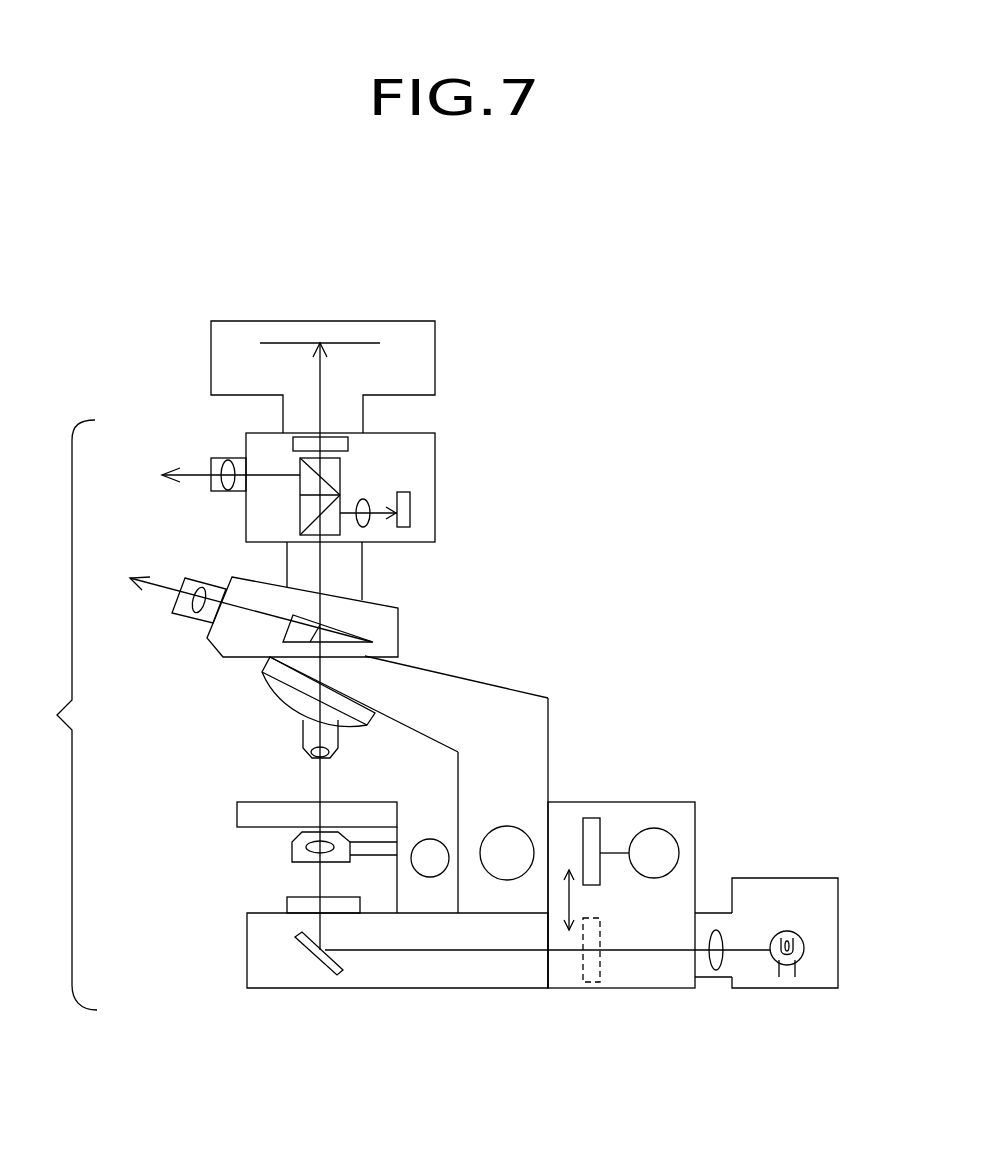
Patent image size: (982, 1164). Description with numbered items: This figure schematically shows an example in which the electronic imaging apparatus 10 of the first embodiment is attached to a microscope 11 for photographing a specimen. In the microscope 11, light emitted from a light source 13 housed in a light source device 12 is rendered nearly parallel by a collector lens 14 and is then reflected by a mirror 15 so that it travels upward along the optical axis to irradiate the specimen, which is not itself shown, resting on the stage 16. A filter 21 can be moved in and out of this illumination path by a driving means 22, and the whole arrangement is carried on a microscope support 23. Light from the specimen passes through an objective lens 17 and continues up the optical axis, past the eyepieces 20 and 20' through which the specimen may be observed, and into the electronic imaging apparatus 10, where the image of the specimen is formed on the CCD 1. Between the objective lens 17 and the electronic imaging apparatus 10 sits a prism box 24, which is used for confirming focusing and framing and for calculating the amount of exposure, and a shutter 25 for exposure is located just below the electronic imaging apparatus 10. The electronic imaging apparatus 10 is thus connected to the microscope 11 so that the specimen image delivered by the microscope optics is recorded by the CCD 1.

The CCD 1 is at (372, 342).
The electronic imaging apparatus 10 is at (435, 360).
The microscope 11 is at (60, 715).
The light source device 12 is at (790, 878).
The light source 13 is at (804, 947).
The collector lens 14 is at (717, 977).
The mirror 15 is at (303, 950).
The stage 16 is at (237, 813).
The objective lens 17 is at (303, 730).
The eyepiece 20 is at (253, 590).
The eyepiece 20' is at (204, 460).
The filter 21 is at (592, 817).
The driving means 22 is at (664, 829).
The microscope support 23 is at (503, 688).
The prism box 24 is at (435, 511).
The shutter 25 is at (348, 442).